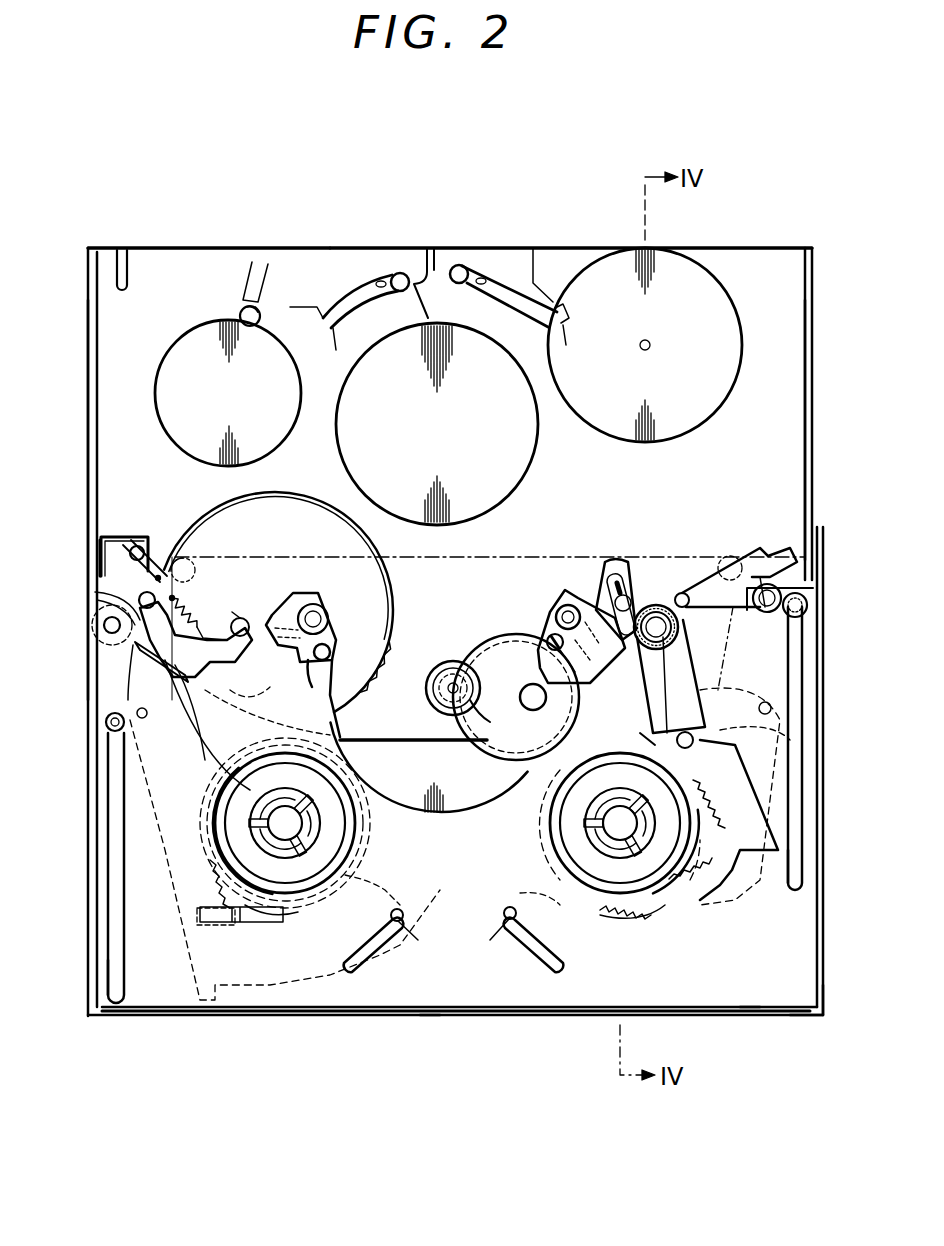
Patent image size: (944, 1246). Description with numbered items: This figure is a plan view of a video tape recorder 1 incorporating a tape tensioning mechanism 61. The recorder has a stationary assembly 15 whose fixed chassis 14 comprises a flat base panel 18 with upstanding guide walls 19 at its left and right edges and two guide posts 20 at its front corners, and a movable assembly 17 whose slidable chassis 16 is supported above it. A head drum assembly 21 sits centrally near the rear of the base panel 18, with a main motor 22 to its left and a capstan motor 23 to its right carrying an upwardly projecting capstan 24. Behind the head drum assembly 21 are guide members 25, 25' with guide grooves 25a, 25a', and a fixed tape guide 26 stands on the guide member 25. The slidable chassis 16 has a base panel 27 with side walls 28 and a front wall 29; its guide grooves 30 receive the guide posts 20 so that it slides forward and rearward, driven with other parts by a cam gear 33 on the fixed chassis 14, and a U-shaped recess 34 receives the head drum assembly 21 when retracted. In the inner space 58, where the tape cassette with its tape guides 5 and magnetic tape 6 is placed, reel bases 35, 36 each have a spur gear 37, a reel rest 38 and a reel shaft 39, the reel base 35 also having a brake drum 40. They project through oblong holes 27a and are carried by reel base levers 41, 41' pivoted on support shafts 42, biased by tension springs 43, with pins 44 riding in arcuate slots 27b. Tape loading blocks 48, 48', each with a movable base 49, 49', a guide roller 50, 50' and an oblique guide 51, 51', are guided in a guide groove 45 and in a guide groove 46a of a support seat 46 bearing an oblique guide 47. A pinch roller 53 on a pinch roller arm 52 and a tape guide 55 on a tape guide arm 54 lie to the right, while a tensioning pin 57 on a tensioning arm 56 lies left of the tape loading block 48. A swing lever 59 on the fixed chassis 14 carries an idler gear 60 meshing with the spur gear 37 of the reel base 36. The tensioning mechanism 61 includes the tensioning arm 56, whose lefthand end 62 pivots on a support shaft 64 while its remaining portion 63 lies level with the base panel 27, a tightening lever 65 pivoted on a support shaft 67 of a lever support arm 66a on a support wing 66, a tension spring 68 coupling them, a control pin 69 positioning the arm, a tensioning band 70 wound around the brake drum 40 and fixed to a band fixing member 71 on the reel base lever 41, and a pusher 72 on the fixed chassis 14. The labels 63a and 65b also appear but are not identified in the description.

The video tape recorder 1 is at (740, 245).
The tape guides 5 is at (200, 557).
The magnetic tape 6 is at (505, 556).
The fixed chassis 14 is at (160, 247).
The stationary assembly 15 is at (216, 238).
The slidable chassis 16 is at (522, 1015).
The movable assembly 17 is at (428, 1016).
The base panel 18 is at (252, 262).
The guide walls 19 is at (97, 340).
The guide posts 20 is at (105, 720).
The head drum assembly 21 is at (528, 455).
The main motor 22 is at (165, 404).
The capstan motor 23 is at (718, 388).
The capstan 24 is at (652, 345).
The guide member 25 is at (349, 262).
The guide groove 25a is at (409, 246).
The guide groove 25a' is at (489, 229).
The guide member 25' is at (526, 259).
The fixed tape guide 26 is at (250, 325).
The base panel 27 is at (790, 1016).
The oblong holes 27a is at (298, 905).
The arcuate slots 27b is at (355, 958).
The side walls 28 is at (100, 982).
The front wall 29 is at (745, 1016).
The guide grooves 30 is at (108, 897).
The cam gear 33 is at (300, 492).
The U-shaped recess 34 is at (475, 803).
The reel base 35 is at (200, 860).
The reel base 36 is at (715, 880).
The spur gears 37 is at (215, 880).
The reel rests 38 is at (320, 870).
The reel shafts 39 is at (300, 820).
The brake drum 40 is at (255, 910).
The reel base lever 41 is at (394, 883).
The reel base lever 41' is at (505, 903).
The support shafts 42 is at (143, 718).
The tension springs 43 is at (748, 820).
The pins 44 is at (400, 920).
The guide groove 45 is at (288, 633).
The support seat 46 is at (540, 690).
The guide groove 46a is at (650, 740).
The oblique guide 47 is at (620, 558).
The tape loading block 48 is at (318, 698).
The tape loading block 48' is at (581, 593).
The movable base 49 is at (352, 623).
The movable base 49' is at (537, 645).
The guide roller 50 is at (329, 596).
The guide roller 50' is at (534, 602).
The oblique guide 51 is at (376, 640).
The oblique guide 51' is at (532, 633).
The pinch roller arm 52 is at (682, 627).
The pinch roller 53 is at (668, 645).
The tape guide arm 54 is at (710, 575).
The tape guide 55 is at (678, 595).
The tensioning arm 56 is at (218, 662).
The tensioning pin 57 is at (243, 620).
The inner space 58 is at (425, 843).
The swing lever 59 is at (455, 716).
The idler gear 60 is at (495, 725).
The tape tensioning mechanism 61 is at (212, 608).
The lefthand end 62 is at (120, 650).
The remaining portion 63 is at (148, 648).
The pivot pin 63a is at (137, 600).
The support shaft 64 is at (100, 627).
The tightening lever 65 is at (160, 548).
The roller holder 65b is at (125, 548).
The support wing 66 is at (118, 535).
The lever support arm 66a is at (100, 545).
The support shaft 67 is at (158, 575).
The tension spring 68 is at (185, 585).
The control pin 69 is at (142, 648).
The tensioning band 70 is at (238, 690).
The band fixing member 71 is at (222, 912).
The pusher 72 is at (128, 285).